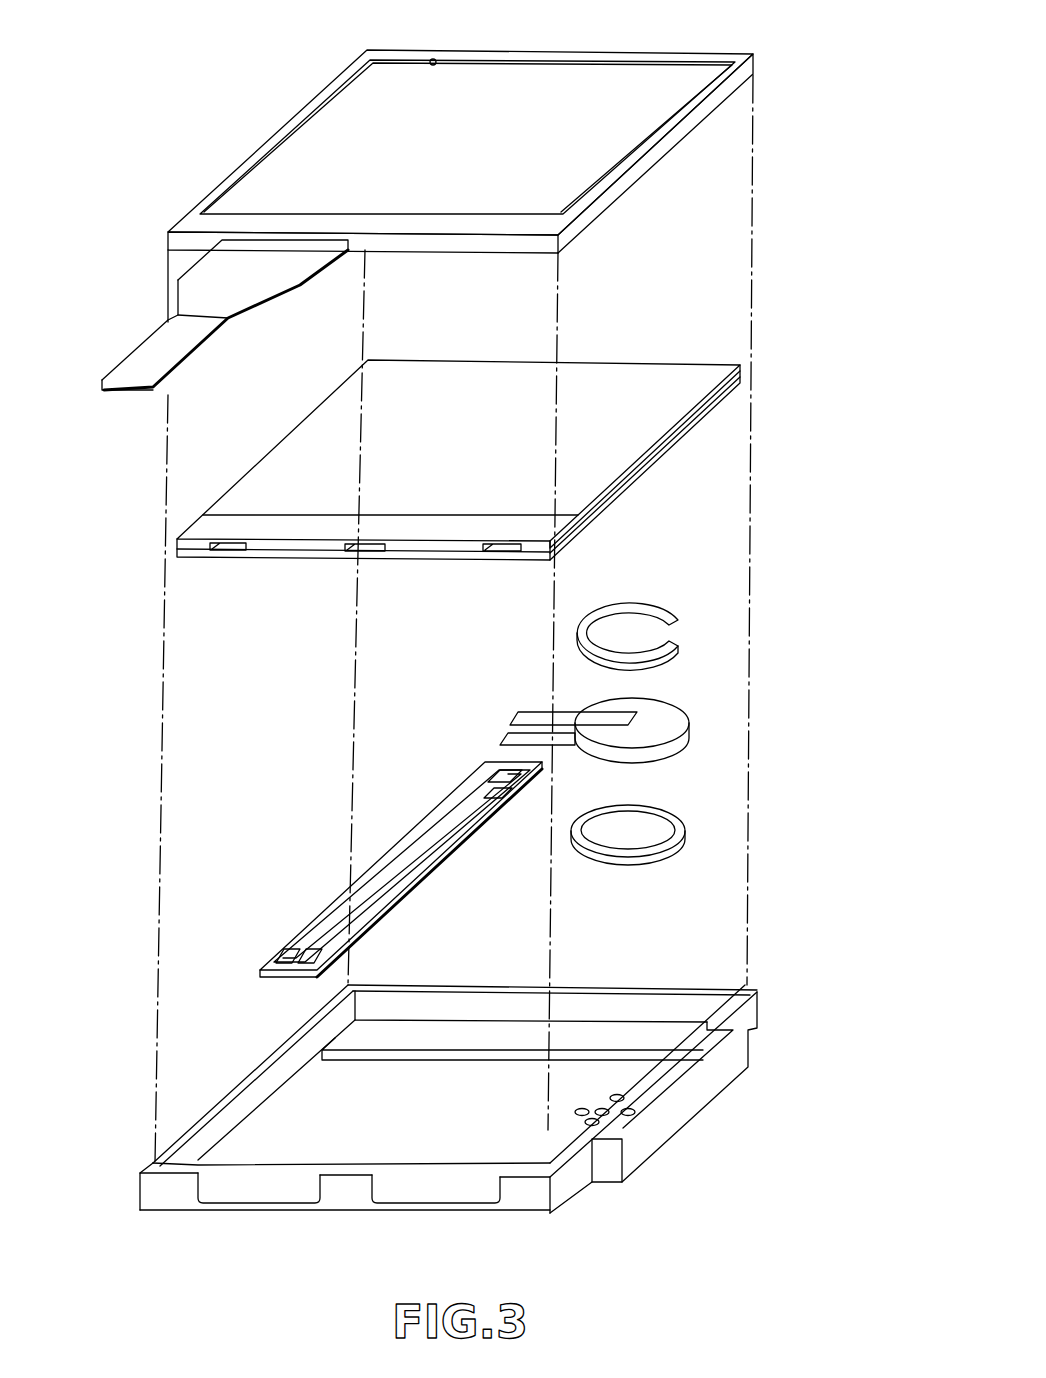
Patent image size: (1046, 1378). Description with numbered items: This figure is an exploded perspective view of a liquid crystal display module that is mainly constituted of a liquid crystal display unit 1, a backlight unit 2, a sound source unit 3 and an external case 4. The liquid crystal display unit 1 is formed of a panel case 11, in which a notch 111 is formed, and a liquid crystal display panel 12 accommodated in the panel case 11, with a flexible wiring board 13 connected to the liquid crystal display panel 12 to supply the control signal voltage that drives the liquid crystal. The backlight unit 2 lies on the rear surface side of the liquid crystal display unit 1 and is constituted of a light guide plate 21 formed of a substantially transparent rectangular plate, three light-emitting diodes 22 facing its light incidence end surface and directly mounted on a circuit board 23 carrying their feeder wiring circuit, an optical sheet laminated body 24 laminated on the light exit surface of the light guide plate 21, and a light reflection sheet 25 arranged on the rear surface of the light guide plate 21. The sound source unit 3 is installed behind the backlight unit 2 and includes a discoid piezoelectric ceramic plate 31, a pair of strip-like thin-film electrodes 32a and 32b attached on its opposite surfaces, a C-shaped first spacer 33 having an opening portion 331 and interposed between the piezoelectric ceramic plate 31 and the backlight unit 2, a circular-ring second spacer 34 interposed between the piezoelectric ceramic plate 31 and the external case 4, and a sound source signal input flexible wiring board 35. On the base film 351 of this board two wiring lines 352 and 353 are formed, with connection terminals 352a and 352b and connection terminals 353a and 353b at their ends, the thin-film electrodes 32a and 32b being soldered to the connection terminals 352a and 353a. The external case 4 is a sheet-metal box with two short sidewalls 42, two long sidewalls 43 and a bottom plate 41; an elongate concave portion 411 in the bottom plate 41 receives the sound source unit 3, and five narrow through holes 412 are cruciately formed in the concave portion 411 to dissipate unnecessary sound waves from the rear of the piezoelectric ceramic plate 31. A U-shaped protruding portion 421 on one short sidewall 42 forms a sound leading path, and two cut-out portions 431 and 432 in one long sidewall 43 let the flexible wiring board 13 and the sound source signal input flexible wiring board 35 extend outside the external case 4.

The liquid crystal display unit 1 is at (618, 50).
The panel case 11 is at (195, 223).
The liquid crystal display panel 12 is at (287, 173).
The flexible wiring board 13 is at (195, 288).
The notch 111 is at (433, 60).
The backlight unit 2 is at (626, 364).
The light guide plate 21 is at (692, 432).
The light-emitting diodes 22 is at (229, 552).
The circuit board 23 is at (525, 526).
The optical sheet laminated body 24 is at (720, 398).
The light reflection sheet 25 is at (653, 472).
The sound source unit 3 is at (828, 603).
The piezoelectric ceramic plate 31 is at (672, 717).
The thin-film electrode 32a is at (532, 714).
The thin-film electrode 32b is at (520, 736).
The first spacer 33 is at (699, 667).
The opening portion 331 is at (673, 642).
The second spacer 34 is at (685, 833).
The sound source signal input flexible wiring board 35 is at (376, 847).
The base film 351 is at (483, 826).
The wiring line 352 is at (352, 902).
The connection terminal 352a is at (500, 768).
The connection terminal 352b is at (290, 955).
The wiring line 353 is at (432, 853).
The connection terminal 353a is at (495, 790).
The connection terminal 353b is at (322, 940).
The external case 4 is at (760, 1003).
The bottom plate 41 is at (306, 1224).
The concave portion 411 is at (323, 1105).
The through holes 412 is at (617, 1090).
The short sidewall 42 is at (678, 1114).
The protruding portion 421 is at (698, 1088).
The long sidewall 43 is at (165, 1188).
The cut-out portion 431 is at (320, 1190).
The cut-out portion 432 is at (505, 1190).